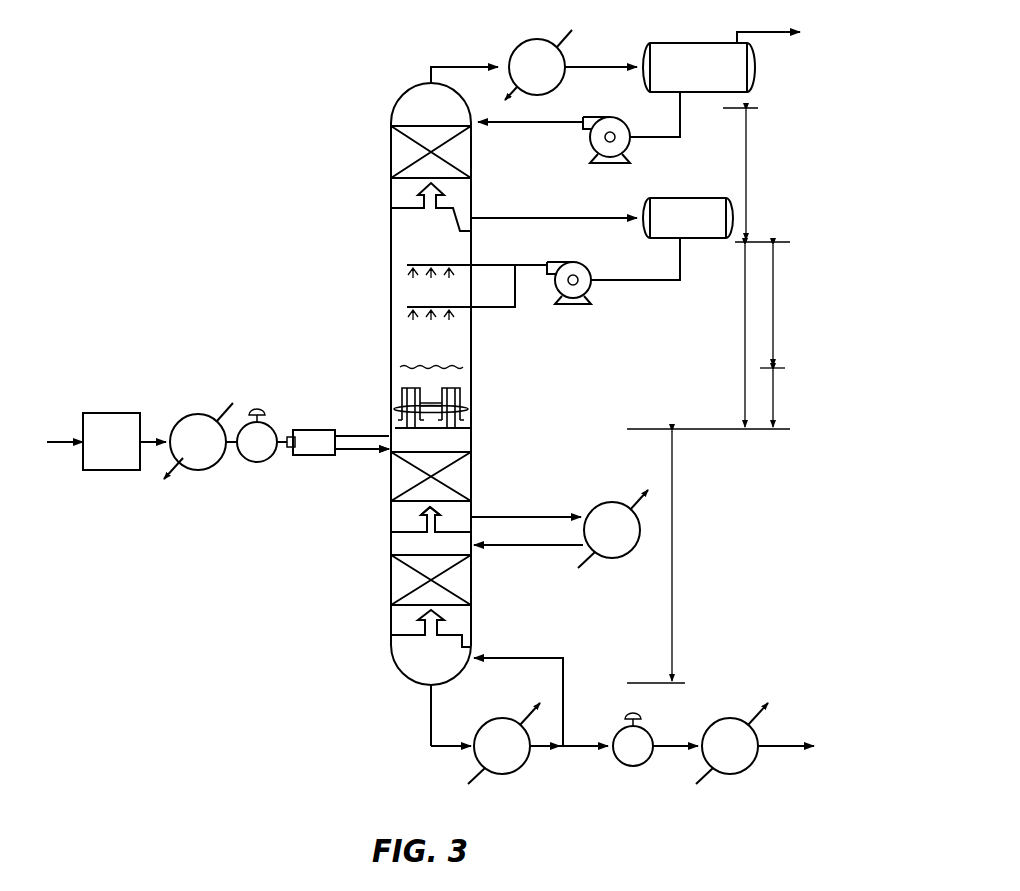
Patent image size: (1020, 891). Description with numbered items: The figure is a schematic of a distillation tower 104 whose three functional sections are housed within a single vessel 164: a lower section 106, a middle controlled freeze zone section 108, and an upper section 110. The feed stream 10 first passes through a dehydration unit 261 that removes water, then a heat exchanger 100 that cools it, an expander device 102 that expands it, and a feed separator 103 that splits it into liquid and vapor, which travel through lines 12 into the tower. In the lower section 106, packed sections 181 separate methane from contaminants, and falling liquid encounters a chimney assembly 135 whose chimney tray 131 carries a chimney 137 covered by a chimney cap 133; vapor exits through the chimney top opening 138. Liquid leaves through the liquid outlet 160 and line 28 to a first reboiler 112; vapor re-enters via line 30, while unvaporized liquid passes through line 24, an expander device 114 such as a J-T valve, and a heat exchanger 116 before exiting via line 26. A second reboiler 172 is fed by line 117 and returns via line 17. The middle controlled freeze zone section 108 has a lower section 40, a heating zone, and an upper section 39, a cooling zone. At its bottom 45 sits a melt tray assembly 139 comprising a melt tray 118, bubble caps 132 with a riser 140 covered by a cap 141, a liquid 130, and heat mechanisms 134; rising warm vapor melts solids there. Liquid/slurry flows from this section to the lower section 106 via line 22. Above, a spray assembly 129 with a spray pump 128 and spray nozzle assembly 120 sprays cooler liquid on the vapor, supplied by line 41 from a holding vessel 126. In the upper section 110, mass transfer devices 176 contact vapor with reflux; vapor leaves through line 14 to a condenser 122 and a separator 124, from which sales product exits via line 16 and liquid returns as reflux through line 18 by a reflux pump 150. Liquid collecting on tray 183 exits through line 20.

The feed stream 10 is at (60, 440).
The lines 12 is at (315, 430).
The line 14 is at (462, 62).
The line 16 is at (748, 32).
The line 17 is at (566, 548).
The line 18 is at (542, 125).
The line 20 is at (520, 218).
The line 22 is at (388, 432).
The line 24 is at (573, 745).
The line 26 is at (778, 745).
The line 28 is at (445, 748).
The line 30 is at (521, 658).
The upper section 39 is at (773, 307).
The lower section 40 is at (773, 394).
The line 41 is at (630, 280).
The bottom 45 is at (433, 430).
The heat exchanger 100 is at (203, 414).
The expander device 102 is at (256, 462).
The feed separator 103 is at (291, 448).
The distillation tower 104 is at (300, 90).
The lower section 106 is at (672, 547).
The middle controlled freeze zone section 108 is at (745, 332).
The upper section 110 is at (746, 172).
The first reboiler 112 is at (510, 718).
The expander device 114 is at (644, 766).
The heat exchanger 116 is at (735, 718).
The line 117 is at (540, 517).
The melt tray 118 is at (460, 430).
The spray nozzle assembly 120 is at (410, 272).
The condenser 122 is at (537, 39).
The separator 124 is at (672, 43).
The holding vessel 126 is at (672, 198).
The spray pump 128 is at (582, 262).
The spray assembly 129 is at (527, 307).
The liquid 130 is at (466, 406).
The chimney tray 131 is at (400, 535).
The bubble cap 132 is at (462, 392).
The chimney cap 133 is at (441, 516).
The heat mechanism 134 is at (400, 406).
The chimney assembly 135 is at (352, 540).
The chimney 137 is at (418, 526).
The chimney top opening 138 is at (421, 518).
The melt tray assembly 139 is at (463, 380).
The riser 140 is at (468, 424).
The cap 141 is at (407, 387).
The reflux pump 150 is at (616, 117).
The liquid outlet 160 is at (431, 688).
The single vessel 164 is at (478, 625).
The second reboiler 172 is at (611, 502).
The mass transfer device 176 is at (413, 125).
The packed section 181 is at (410, 446).
The tray 183 is at (415, 200).
The dehydration unit 261 is at (122, 413).